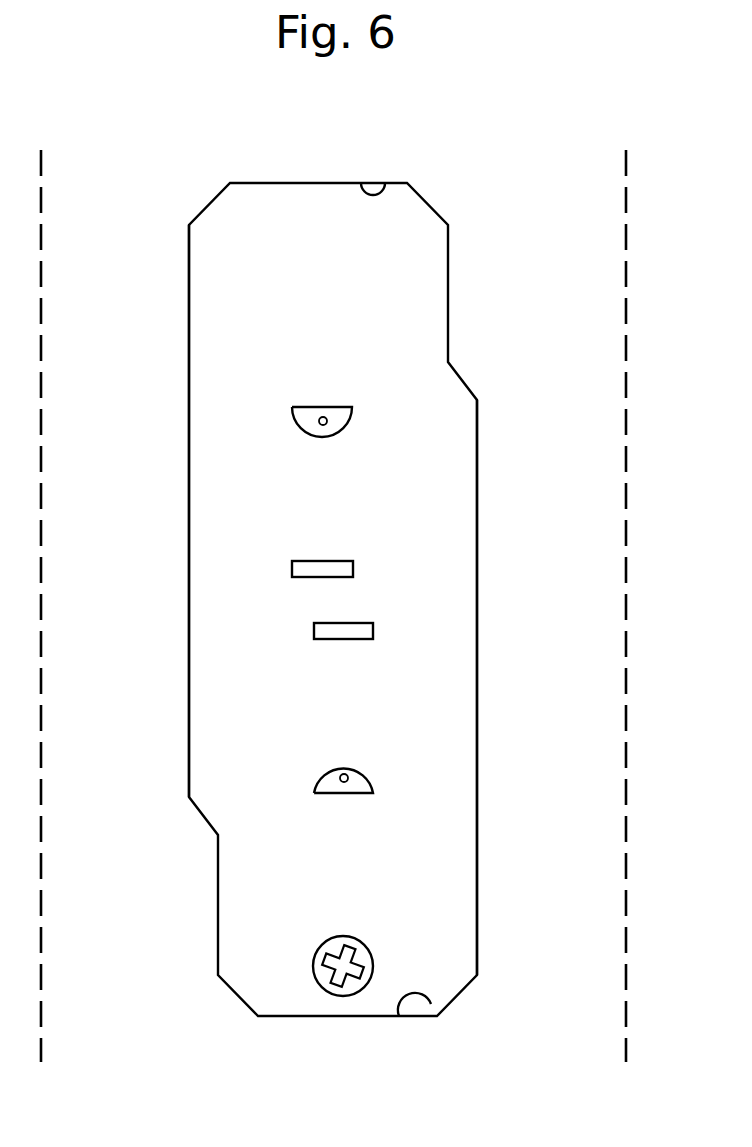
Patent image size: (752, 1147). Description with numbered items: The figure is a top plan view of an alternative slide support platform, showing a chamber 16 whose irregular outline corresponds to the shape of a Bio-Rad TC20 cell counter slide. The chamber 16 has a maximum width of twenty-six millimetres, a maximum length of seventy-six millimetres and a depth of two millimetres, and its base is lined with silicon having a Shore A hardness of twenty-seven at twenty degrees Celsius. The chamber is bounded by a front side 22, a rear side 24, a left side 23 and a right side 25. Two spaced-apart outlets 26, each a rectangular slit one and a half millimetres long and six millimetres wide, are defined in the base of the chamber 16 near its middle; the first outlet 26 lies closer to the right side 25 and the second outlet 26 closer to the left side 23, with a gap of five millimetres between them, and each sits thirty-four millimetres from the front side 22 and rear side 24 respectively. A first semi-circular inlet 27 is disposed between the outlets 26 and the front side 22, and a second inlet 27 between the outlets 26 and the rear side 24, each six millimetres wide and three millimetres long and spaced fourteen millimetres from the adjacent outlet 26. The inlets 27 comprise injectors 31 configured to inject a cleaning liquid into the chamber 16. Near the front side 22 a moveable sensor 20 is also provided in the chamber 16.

The chamber 16 is at (289, 243).
The moveable sensor 20 is at (334, 994).
The front side 22 is at (429, 1002).
The left side 23 is at (189, 697).
The rear side 24 is at (380, 192).
The right side 25 is at (478, 732).
The outlet 26 is at (292, 568).
The inlet 27 is at (345, 405).
The injector 31 is at (319, 422).